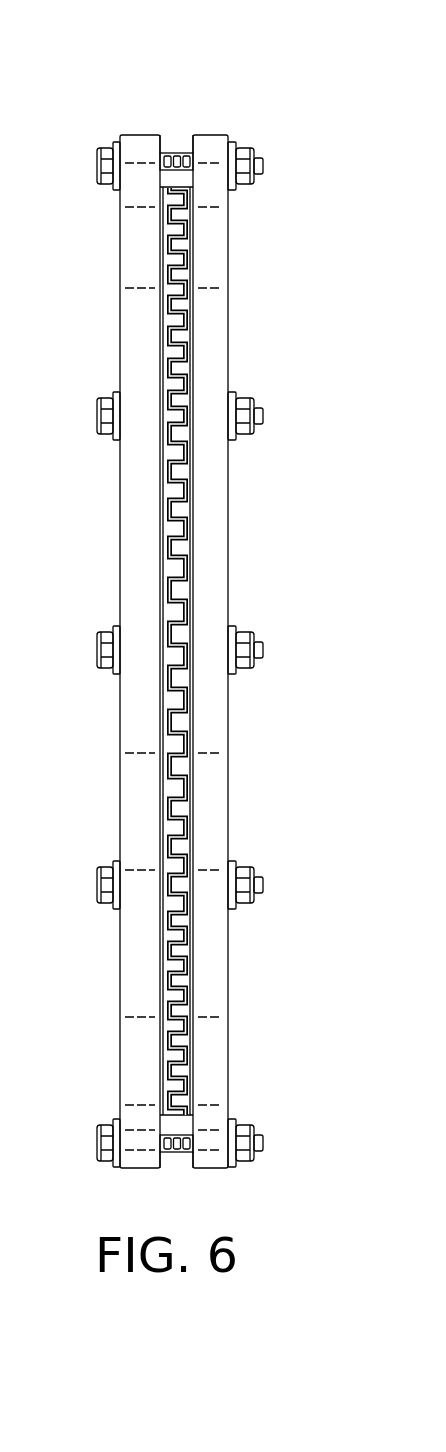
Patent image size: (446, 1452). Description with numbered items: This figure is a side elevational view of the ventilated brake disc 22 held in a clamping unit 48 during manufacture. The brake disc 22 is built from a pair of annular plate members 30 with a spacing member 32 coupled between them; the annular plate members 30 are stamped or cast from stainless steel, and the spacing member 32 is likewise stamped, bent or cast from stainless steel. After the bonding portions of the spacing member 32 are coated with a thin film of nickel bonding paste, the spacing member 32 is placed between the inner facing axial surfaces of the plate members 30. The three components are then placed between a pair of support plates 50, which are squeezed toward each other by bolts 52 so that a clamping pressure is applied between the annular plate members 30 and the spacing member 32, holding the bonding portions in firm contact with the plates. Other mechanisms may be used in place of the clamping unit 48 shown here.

The brake disc 22 is at (203, 267).
The annular plate members 30 is at (155, 370).
The spacing member 32 is at (184, 334).
The clamping unit 48 is at (178, 128).
The support plates 50 is at (120, 236).
The bolts 52 is at (97, 163).